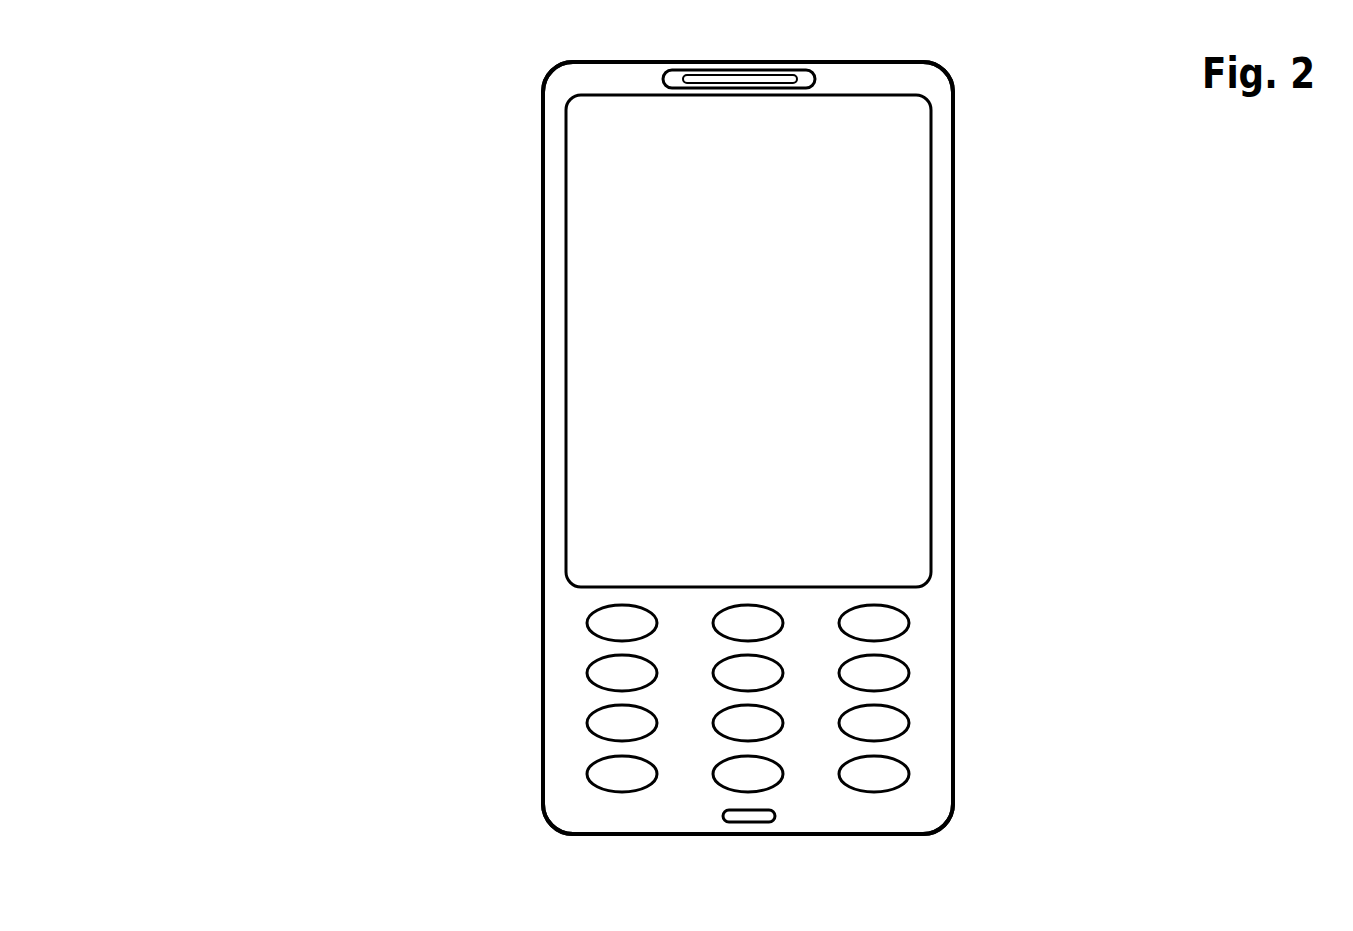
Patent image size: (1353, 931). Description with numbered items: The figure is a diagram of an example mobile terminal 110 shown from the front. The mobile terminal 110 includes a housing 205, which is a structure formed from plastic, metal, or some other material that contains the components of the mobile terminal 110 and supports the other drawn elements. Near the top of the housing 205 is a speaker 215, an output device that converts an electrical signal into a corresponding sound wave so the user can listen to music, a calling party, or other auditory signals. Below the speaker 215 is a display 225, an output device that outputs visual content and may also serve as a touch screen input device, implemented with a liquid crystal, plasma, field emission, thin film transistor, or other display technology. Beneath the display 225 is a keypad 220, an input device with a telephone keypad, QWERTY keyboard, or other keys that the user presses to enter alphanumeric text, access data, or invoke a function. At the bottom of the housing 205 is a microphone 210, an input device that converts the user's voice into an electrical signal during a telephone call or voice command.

The mobile terminal 110 is at (307, 84).
The housing 205 is at (542, 372).
The microphone 210 is at (775, 817).
The speaker 215 is at (815, 83).
The keypad 220 is at (528, 608).
The display 225 is at (915, 316).